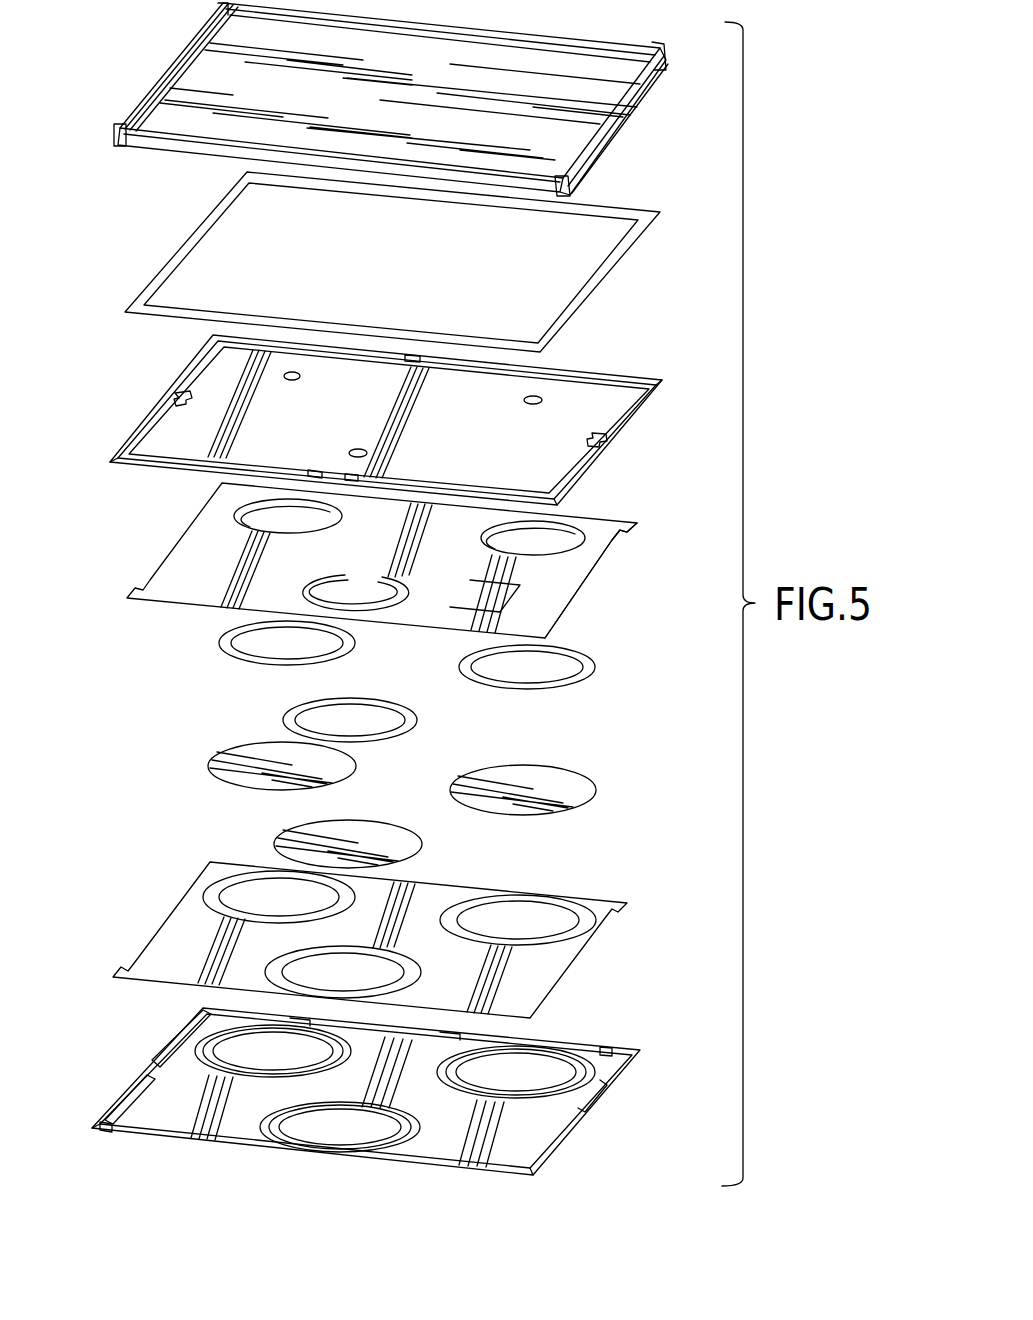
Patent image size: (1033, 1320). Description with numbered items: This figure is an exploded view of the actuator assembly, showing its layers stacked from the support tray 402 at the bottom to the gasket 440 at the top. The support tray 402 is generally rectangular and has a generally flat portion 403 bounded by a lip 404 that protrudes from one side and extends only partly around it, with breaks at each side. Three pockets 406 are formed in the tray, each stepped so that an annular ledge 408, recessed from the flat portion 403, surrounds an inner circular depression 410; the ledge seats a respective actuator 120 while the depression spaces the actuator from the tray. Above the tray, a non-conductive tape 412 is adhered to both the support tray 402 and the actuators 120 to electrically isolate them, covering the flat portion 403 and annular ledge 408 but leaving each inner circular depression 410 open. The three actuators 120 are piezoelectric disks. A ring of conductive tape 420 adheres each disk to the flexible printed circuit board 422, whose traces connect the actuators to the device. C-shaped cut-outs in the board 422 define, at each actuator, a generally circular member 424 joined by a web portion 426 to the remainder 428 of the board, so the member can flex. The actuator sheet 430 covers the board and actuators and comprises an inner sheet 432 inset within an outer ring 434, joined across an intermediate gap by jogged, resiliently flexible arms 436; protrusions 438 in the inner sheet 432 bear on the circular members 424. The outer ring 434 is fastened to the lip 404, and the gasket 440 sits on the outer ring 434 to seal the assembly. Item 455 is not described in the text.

The cover frame 455 is at (140, 143).
The gasket 440 is at (135, 305).
The actuator sheet 430 is at (383, 412).
The inner sheet 432 is at (578, 392).
The outer ring 434 is at (646, 398).
The resiliently flexible arms 436 is at (603, 442).
The protrusions 438 is at (290, 377).
The flexible printed circuit board 422 is at (363, 557).
The generally circular member 424 is at (580, 540).
The remainder of the flexible printed circuit board 428 is at (540, 590).
The web portion 426 is at (540, 535).
The ring of conductive tape 420 is at (570, 640).
The actuators 120 is at (243, 758).
The non-conductive tape 412 is at (592, 955).
The support tray 402 is at (380, 1091).
The flat portion 403 is at (135, 1118).
The lip 404 is at (560, 1150).
The pockets 406 is at (205, 1065).
The annular ledge 408 is at (207, 1052).
The inner circular depression 410 is at (235, 1053).